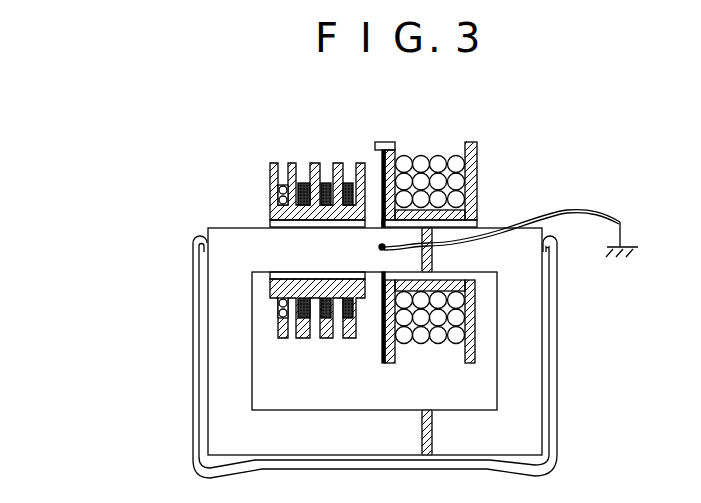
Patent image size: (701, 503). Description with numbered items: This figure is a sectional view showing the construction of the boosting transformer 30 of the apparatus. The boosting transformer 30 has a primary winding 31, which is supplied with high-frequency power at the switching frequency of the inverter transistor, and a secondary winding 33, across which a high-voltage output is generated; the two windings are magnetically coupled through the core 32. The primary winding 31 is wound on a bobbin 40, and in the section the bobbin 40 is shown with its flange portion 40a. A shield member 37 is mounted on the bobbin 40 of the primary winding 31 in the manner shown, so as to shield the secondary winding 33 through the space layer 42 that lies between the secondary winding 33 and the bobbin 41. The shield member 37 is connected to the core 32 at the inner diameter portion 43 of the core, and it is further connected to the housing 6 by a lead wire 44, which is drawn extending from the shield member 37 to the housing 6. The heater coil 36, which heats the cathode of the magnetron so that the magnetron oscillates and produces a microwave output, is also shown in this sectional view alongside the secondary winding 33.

The boosting transformer 30 is at (198, 192).
The primary winding 31 is at (438, 155).
The core 32 is at (240, 228).
The secondary winding 33 is at (326, 182).
The heater coil 36 is at (283, 184).
The shield member 37 is at (378, 153).
The bobbin 40 is at (478, 212).
The bobbin flange 40a is at (478, 156).
The bobbin 41 is at (380, 172).
The space layer 42 is at (369, 346).
The inner diameter portion 43 is at (366, 272).
The lead wire 44 is at (567, 209).
The housing 6 is at (635, 246).